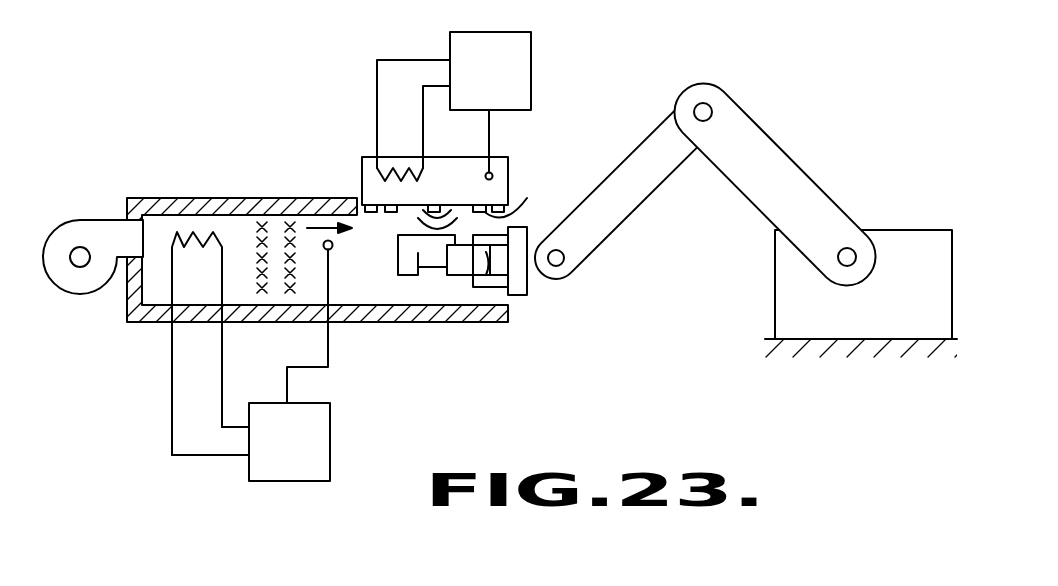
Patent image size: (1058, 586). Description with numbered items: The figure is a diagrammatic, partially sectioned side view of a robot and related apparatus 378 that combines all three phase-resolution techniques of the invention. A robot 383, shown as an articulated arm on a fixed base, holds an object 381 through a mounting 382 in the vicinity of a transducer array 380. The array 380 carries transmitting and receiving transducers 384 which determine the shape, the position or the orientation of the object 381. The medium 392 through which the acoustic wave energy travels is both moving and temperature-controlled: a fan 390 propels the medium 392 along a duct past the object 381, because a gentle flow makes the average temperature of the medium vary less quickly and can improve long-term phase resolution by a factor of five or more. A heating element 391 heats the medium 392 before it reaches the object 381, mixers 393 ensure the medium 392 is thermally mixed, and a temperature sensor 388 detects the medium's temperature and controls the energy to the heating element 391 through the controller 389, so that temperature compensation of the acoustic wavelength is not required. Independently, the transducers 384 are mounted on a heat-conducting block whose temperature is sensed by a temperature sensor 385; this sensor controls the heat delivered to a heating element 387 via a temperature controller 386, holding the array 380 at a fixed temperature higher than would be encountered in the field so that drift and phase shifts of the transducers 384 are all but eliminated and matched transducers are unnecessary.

The drying station 378 is at (216, 0).
The transducer array 380 is at (372, 171).
The object 381 is at (463, 278).
The mounting plate 382 is at (527, 290).
The robot 383 is at (792, 165).
The transducers 384 is at (440, 212).
The temperature sensor 385 is at (491, 133).
The temperature controller 386 is at (512, 18).
The heating element 387 is at (372, 169).
The temperature sensor 388 is at (329, 285).
The controller 389 is at (323, 423).
The fan 390 is at (97, 217).
The heating element 391 is at (173, 236).
The medium 392 is at (322, 227).
The mixers 393 is at (258, 222).